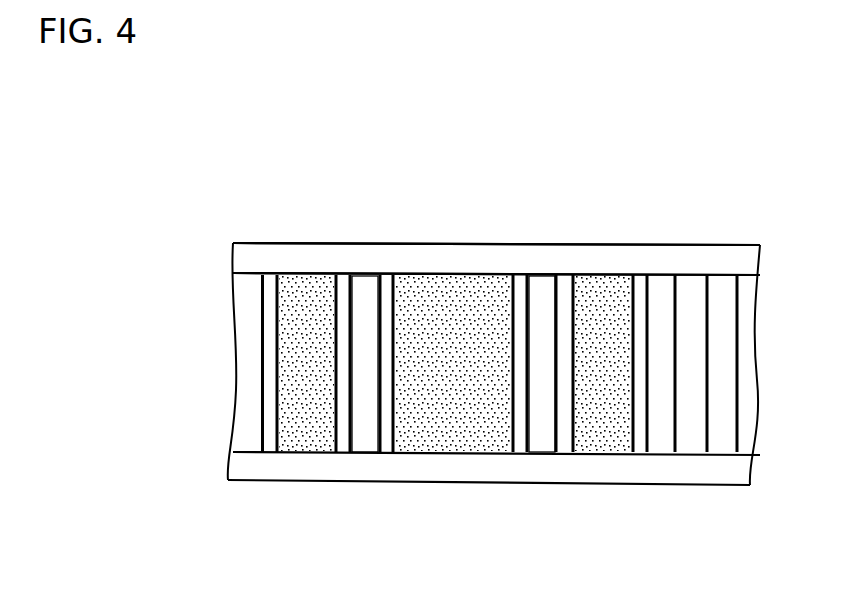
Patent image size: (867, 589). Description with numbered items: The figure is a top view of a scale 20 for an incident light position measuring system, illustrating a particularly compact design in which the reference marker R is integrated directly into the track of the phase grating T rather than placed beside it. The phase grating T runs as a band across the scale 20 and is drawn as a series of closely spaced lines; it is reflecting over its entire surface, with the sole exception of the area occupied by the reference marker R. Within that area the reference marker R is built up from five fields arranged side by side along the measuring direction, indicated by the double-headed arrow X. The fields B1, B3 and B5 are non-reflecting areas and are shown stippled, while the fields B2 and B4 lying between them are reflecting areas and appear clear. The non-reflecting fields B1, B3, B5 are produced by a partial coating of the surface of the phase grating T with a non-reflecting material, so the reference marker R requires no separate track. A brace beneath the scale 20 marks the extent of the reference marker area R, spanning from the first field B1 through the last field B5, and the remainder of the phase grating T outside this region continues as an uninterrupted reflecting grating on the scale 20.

The phase grating T is at (753, 335).
The scale 20 is at (747, 262).
The field B1 is at (306, 282).
The field B2 is at (367, 287).
The field B3 is at (458, 283).
The field B4 is at (545, 290).
The field B5 is at (610, 290).
The reference marker R is at (629, 452).
The tape feed direction X is at (575, 147).